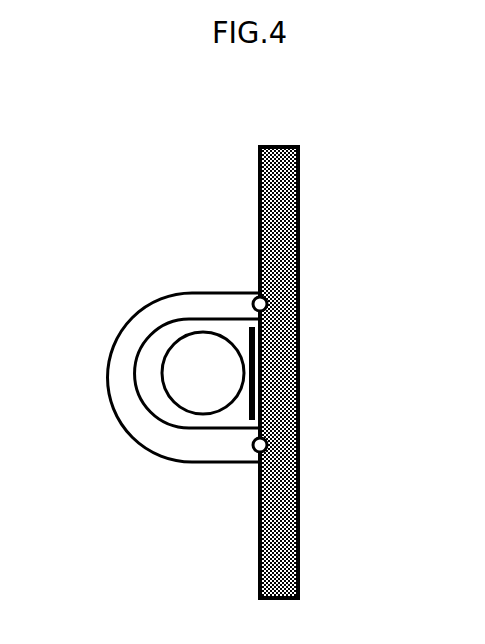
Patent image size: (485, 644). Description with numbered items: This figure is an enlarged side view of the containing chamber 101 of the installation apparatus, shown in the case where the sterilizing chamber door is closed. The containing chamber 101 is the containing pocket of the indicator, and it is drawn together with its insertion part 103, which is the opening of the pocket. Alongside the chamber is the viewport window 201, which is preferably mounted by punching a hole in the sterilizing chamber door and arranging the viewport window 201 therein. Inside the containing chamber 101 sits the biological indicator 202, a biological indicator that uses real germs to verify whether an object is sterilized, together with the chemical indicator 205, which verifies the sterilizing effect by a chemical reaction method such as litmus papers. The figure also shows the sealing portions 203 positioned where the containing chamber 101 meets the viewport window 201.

The containing chamber 101 is at (121, 408).
The insertion part 103 is at (280, 382).
The viewport window 201 is at (308, 552).
The biological indicator 202 is at (193, 377).
The sealing portions 203 is at (278, 435).
The chemical indicator 205 is at (240, 335).